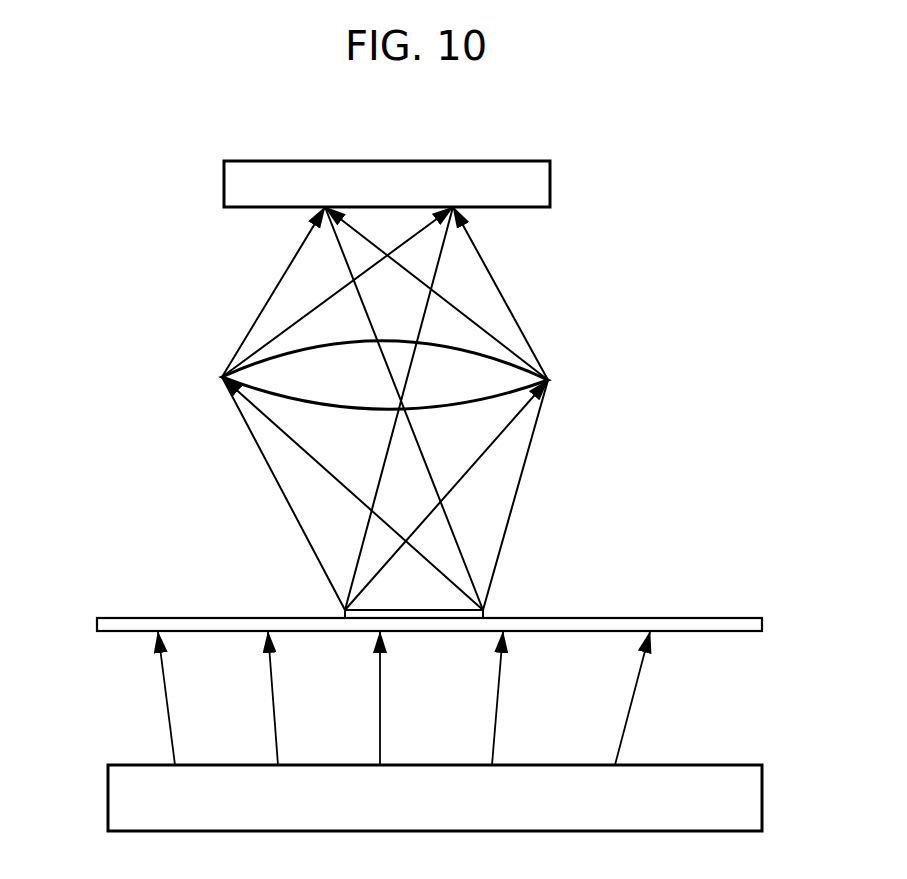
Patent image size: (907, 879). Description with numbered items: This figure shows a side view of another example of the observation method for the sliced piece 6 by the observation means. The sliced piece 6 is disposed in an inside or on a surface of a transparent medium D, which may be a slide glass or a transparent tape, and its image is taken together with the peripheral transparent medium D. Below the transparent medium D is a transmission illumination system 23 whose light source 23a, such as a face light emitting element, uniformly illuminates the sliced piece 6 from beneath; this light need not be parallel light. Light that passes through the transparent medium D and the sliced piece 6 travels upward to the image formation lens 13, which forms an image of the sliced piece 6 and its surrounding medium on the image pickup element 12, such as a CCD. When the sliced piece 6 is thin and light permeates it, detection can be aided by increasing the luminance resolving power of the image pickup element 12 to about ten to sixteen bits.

The image pickup element 12 is at (533, 182).
The image formation lens 13 is at (545, 362).
The sliced piece 6 is at (448, 608).
The transparent medium D is at (685, 618).
The illumination device 23 is at (748, 717).
The light source unit 23a is at (740, 800).